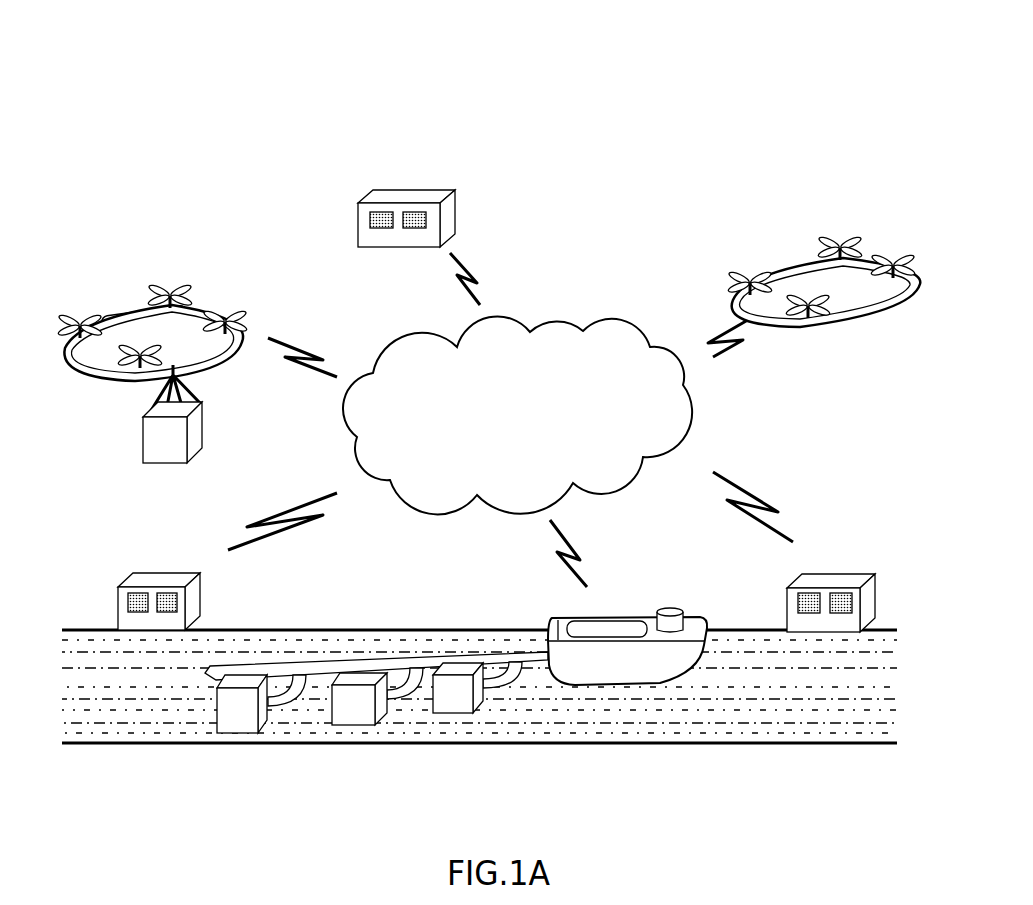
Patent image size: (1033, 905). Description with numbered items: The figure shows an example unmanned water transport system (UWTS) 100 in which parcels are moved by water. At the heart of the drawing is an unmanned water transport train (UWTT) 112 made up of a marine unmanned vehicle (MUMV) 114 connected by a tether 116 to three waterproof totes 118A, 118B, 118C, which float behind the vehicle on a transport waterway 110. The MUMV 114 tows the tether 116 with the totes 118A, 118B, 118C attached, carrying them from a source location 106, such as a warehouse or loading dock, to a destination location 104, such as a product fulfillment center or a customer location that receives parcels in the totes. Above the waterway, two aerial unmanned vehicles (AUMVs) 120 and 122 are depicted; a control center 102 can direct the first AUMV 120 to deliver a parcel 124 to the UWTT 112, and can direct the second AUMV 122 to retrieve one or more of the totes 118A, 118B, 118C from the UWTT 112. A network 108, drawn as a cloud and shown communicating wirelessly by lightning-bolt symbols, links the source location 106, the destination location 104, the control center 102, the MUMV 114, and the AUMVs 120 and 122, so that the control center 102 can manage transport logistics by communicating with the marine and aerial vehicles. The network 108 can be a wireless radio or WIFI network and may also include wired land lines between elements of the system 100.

The unmanned water transport system 100 is at (445, 54).
The control center 102 is at (398, 188).
The destination location 104 is at (849, 573).
The source location 106 is at (167, 572).
The network 108 is at (537, 447).
The transport waterway 110 is at (621, 762).
The unmanned water transport train 112 is at (644, 576).
The marine unmanned vehicle 114 is at (642, 679).
The tether 116 is at (497, 660).
The waterproof tote 118A is at (450, 705).
The waterproof tote 118B is at (353, 702).
The waterproof tote 118C is at (240, 710).
The aerial unmanned vehicle 120 is at (133, 312).
The aerial unmanned vehicle 122 is at (797, 262).
The parcel 124 is at (158, 443).